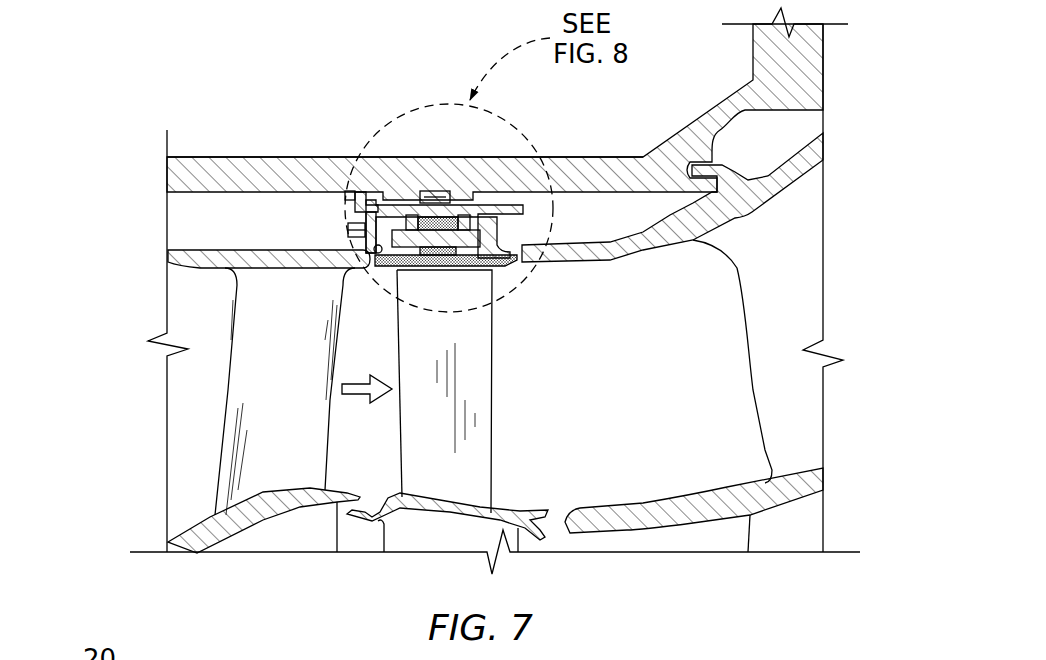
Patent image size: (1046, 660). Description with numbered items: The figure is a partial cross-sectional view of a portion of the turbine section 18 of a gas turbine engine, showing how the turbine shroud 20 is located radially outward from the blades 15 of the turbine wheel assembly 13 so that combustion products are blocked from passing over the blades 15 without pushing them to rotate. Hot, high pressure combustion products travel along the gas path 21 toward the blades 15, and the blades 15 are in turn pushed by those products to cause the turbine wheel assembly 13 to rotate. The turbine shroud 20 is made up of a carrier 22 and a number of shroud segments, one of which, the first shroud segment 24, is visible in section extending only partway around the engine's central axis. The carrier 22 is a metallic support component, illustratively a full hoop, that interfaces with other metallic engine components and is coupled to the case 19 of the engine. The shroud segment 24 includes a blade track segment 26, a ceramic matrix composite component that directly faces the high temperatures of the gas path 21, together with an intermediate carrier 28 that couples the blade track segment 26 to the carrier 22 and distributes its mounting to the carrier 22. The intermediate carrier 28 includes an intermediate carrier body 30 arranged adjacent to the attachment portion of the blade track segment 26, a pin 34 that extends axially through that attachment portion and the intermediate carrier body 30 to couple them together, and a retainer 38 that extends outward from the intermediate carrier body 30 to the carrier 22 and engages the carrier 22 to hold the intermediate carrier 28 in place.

The turbine wheel assembly 13 is at (567, 353).
The blades 15 is at (500, 423).
The turbine section 18 is at (202, 100).
The case 19 is at (190, 157).
The turbine shroud 20 is at (560, 208).
The gas path 21 is at (379, 371).
The carrier 22 is at (333, 198).
The first shroud segment 24 is at (372, 185).
The blade track segment 26 is at (460, 272).
The intermediate carrier 28 is at (382, 217).
The intermediate carrier body 30 is at (448, 217).
The pin 34 is at (380, 227).
The retainer 38 is at (442, 190).